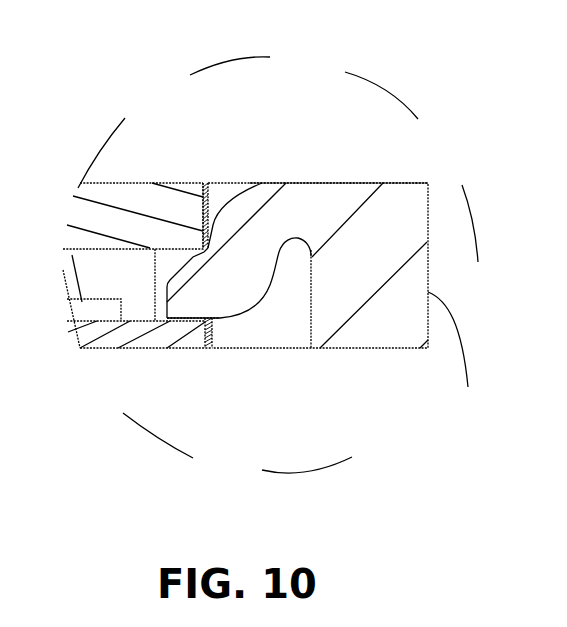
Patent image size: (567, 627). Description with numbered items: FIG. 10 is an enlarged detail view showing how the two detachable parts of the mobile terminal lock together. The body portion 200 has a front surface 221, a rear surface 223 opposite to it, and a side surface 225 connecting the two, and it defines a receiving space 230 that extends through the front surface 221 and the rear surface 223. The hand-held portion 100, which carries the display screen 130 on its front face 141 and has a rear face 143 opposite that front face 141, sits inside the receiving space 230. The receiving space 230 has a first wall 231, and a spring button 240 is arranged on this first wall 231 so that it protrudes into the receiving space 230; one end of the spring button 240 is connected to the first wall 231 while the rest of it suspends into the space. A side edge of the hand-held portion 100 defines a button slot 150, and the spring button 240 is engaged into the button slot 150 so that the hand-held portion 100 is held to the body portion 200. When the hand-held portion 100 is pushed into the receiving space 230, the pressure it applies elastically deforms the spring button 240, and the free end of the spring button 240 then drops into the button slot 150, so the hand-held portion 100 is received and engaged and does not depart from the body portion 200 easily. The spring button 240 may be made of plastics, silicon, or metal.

The hand-held portion 100 is at (122, 180).
The display screen 130 is at (92, 342).
The front face 141 is at (80, 245).
The rear face 143 is at (152, 183).
The button slot 150 is at (167, 270).
The body portion 200 is at (380, 178).
The front surface 221 is at (375, 350).
The rear surface 223 is at (295, 183).
The side surface 225 is at (460, 348).
The receiving space 230 is at (207, 350).
The first wall 231 is at (312, 320).
The spring button 240 is at (245, 208).